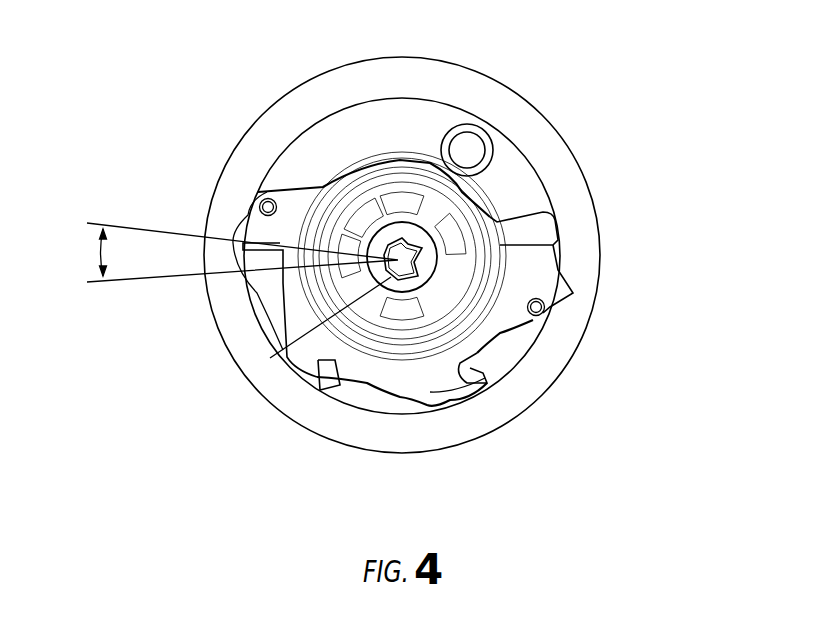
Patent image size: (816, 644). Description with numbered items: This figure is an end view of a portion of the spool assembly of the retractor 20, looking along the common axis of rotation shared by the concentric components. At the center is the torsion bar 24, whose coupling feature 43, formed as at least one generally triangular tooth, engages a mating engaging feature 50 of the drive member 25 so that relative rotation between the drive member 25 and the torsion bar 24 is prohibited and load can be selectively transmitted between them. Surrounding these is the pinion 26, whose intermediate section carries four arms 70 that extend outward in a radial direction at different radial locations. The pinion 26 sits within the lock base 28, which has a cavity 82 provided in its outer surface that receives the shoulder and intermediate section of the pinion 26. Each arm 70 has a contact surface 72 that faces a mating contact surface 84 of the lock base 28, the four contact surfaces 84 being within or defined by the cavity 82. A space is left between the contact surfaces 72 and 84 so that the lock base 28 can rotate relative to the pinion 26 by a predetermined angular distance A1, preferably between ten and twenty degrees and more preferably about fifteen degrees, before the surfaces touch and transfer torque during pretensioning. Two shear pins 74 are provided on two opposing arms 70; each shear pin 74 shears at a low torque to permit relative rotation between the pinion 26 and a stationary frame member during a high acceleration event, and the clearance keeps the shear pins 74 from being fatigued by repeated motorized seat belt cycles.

The retractor 20 is at (563, 87).
The torsion bar 24 is at (392, 247).
The drive member 25 is at (413, 235).
The pinion 26 is at (375, 350).
The lock base 28 is at (580, 205).
The coupling feature 43 is at (243, 370).
The engaging feature 50 is at (402, 258).
The arm 70 is at (428, 397).
The contact surface 72 is at (258, 203).
The shear pin 74 is at (545, 310).
The cavity 82 is at (433, 118).
The contact surface 84 is at (247, 295).
The angular distance A1 is at (235, 252).